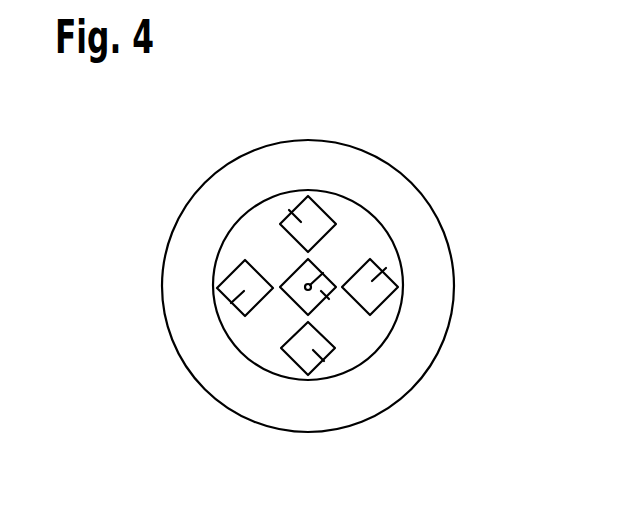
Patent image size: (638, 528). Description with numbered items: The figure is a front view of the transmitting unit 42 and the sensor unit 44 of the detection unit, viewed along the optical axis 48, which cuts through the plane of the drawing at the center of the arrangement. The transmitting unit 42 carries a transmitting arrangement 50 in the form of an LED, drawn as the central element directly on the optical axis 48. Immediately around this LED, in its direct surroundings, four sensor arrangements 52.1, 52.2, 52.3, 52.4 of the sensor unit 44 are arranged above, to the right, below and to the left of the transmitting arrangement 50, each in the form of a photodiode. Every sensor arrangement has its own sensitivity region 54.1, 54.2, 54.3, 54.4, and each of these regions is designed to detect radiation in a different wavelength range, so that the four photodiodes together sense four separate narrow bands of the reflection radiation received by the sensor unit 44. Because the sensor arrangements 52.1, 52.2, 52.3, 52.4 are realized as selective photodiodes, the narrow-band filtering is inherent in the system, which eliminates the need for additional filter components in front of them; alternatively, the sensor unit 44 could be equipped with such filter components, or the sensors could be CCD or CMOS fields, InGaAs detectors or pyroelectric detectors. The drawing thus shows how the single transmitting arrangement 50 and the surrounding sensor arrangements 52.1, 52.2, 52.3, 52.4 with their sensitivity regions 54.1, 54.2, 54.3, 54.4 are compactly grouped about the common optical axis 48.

The transmitting unit 42 is at (362, 341).
The sensor unit 44 is at (309, 158).
The optical axis 48 is at (323, 273).
The transmitting arrangement 50 is at (340, 317).
The sensor arrangement 52.1 is at (293, 200).
The sensor arrangement 52.2 is at (404, 272).
The sensor arrangement 52.3 is at (322, 382).
The sensor arrangement 52.4 is at (212, 302).
The sensitivity region 54.1 is at (289, 210).
The sensitivity region 54.2 is at (386, 268).
The sensitivity region 54.3 is at (324, 361).
The sensitivity region 54.4 is at (231, 303).